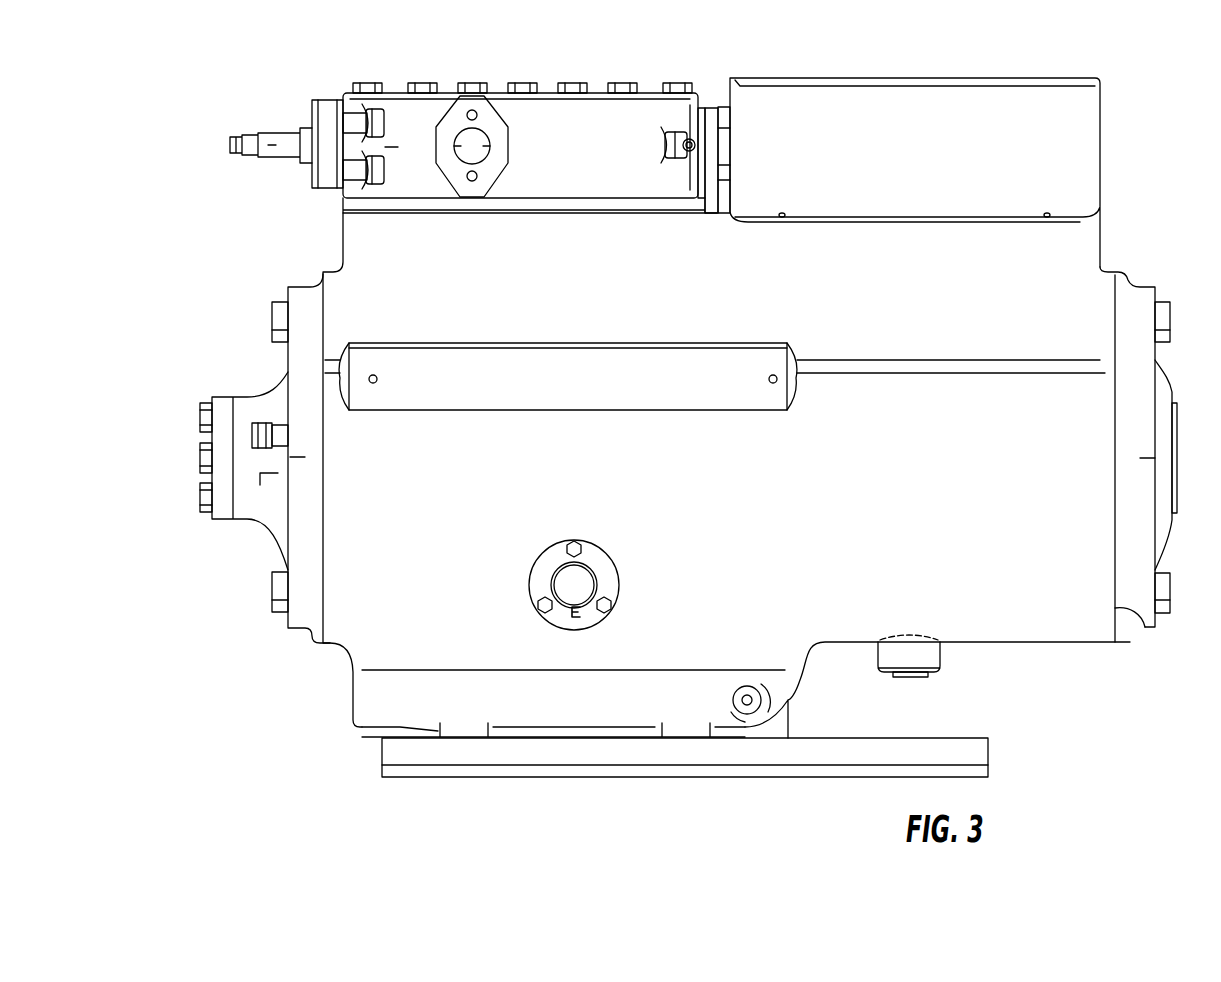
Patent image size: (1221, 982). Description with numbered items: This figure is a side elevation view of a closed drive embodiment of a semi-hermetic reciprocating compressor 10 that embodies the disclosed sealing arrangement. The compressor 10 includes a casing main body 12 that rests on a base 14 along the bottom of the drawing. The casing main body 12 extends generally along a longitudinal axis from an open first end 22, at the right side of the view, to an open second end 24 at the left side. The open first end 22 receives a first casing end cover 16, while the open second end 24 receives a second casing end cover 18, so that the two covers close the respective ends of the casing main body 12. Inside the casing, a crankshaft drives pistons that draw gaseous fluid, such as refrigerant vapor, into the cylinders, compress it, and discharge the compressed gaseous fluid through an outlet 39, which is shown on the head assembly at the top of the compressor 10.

The semi-hermetic reciprocating compressor 10 is at (1124, 156).
The casing main body 12 is at (968, 644).
The base 14 is at (790, 718).
The first casing end cover 16 is at (1158, 551).
The second casing end cover 18 is at (288, 345).
The open first end 22 is at (1122, 622).
The open second end 24 is at (323, 528).
The outlet 39 is at (487, 166).